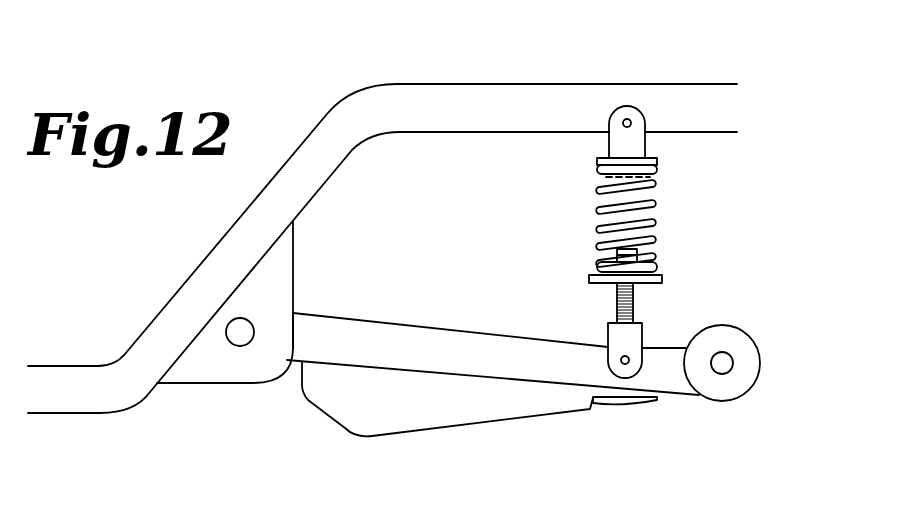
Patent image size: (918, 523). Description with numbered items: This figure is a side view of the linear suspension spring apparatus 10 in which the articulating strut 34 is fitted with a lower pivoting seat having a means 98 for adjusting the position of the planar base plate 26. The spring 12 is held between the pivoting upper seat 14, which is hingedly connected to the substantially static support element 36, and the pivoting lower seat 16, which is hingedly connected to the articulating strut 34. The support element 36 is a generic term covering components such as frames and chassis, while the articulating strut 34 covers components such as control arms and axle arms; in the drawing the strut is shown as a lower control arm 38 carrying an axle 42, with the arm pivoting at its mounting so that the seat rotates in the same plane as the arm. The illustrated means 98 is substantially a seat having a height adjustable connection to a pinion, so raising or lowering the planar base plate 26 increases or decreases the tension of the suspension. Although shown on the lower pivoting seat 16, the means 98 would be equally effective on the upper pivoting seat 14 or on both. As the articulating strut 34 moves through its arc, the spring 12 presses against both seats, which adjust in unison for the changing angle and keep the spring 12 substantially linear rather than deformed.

The linear suspension spring apparatus 10 is at (528, 217).
The spring 12 is at (657, 222).
The pivoting upper seat 14 is at (637, 147).
The pivoting lower seat 16 is at (607, 270).
The planar base plate 26 is at (593, 282).
The articulating strut 34 is at (657, 380).
The support element 36 is at (692, 84).
The lower control arm 38 is at (240, 337).
The axle 42 is at (748, 393).
The means for adjusting the position of the planar base plate 98 is at (657, 263).